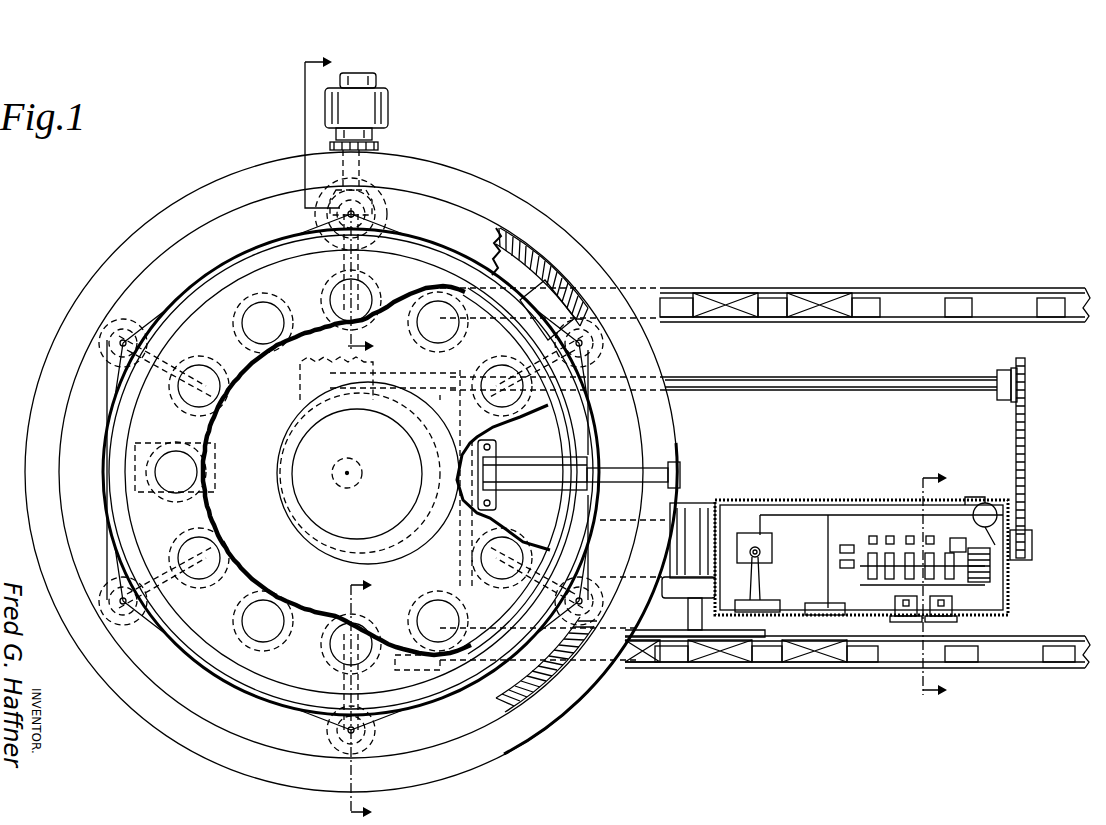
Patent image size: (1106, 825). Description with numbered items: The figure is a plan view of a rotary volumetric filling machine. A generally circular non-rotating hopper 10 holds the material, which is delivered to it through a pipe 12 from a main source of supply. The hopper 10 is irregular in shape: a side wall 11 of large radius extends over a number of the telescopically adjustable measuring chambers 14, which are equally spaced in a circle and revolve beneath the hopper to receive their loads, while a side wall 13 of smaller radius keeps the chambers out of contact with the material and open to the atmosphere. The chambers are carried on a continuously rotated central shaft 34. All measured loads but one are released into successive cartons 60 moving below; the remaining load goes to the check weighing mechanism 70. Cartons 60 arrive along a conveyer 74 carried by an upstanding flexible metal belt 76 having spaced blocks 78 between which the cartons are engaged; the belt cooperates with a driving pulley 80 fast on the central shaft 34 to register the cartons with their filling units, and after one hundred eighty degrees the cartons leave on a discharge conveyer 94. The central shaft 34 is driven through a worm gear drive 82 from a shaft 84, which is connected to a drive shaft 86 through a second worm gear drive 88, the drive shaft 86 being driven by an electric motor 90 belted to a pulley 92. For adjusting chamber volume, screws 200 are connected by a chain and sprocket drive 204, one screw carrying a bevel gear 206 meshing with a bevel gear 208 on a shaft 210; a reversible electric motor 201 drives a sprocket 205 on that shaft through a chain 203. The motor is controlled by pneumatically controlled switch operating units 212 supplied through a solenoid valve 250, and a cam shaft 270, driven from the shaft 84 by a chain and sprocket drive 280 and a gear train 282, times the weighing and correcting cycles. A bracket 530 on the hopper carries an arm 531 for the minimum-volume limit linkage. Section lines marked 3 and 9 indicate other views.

The section line 3- 3 is at (346, 699).
The section line 9- 9 is at (923, 584).
The hopper 10 is at (208, 412).
The side wall 11 is at (560, 385).
The pipe 12 is at (262, 510).
The side wall 13 is at (226, 400).
The measuring chambers 14 is at (208, 548).
The central shaft 34 is at (352, 466).
The cartons 60 is at (722, 298).
The check weighing mechanism 70 is at (195, 457).
The conveyer 74 is at (1008, 662).
The flexible metal belt 76 is at (1035, 636).
The blocks 78 is at (770, 300).
The driving pulley 80 is at (503, 477).
The worm gear drive 82 is at (314, 394).
The shaft 84 is at (700, 376).
The drive shaft 86 is at (460, 568).
The second worm gear drive 88 is at (457, 392).
The electric motor 90 is at (804, 568).
The pulley 92 is at (401, 666).
The discharge conveyer 94 is at (683, 281).
The screws 200 is at (356, 212).
The reversible electric motor 201 is at (390, 98).
The chain 203 is at (380, 147).
The chain and sprocket drive 204 is at (150, 290).
The sprocket 205 is at (332, 136).
The bevel gear 206 is at (380, 190).
The bevel gear 208 is at (372, 174).
The shaft 210 is at (331, 170).
The pneumatically controlled switch operating units 212 is at (900, 602).
The solenoid valve 250 is at (997, 512).
The cam shaft 270 is at (940, 575).
The chain and sprocket drive 280 is at (1025, 460).
The gear train 282 is at (992, 572).
The bracket 530 is at (583, 455).
The arm 531 is at (628, 468).